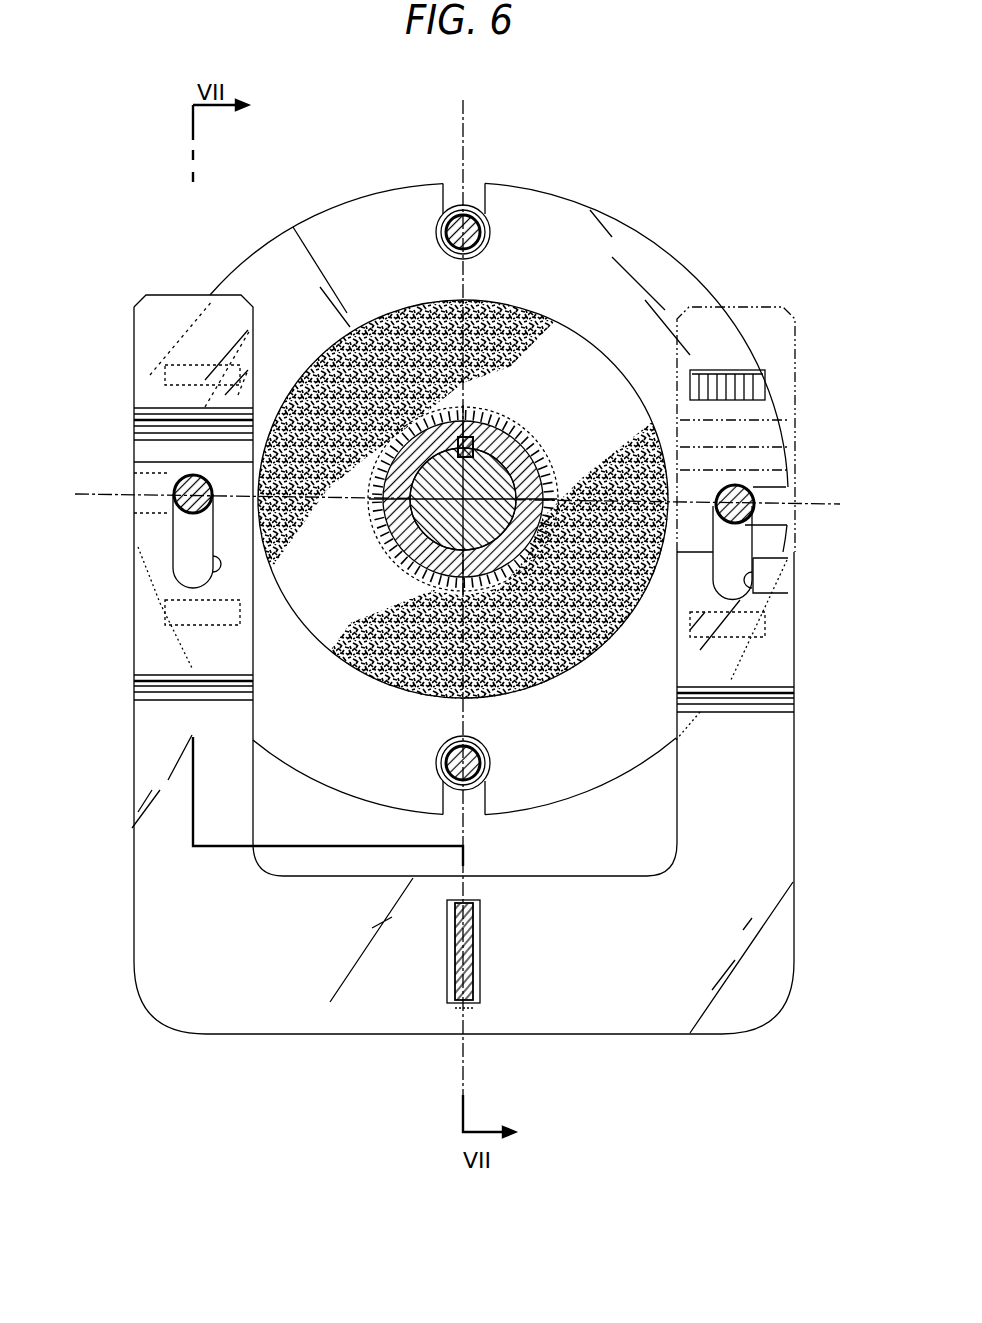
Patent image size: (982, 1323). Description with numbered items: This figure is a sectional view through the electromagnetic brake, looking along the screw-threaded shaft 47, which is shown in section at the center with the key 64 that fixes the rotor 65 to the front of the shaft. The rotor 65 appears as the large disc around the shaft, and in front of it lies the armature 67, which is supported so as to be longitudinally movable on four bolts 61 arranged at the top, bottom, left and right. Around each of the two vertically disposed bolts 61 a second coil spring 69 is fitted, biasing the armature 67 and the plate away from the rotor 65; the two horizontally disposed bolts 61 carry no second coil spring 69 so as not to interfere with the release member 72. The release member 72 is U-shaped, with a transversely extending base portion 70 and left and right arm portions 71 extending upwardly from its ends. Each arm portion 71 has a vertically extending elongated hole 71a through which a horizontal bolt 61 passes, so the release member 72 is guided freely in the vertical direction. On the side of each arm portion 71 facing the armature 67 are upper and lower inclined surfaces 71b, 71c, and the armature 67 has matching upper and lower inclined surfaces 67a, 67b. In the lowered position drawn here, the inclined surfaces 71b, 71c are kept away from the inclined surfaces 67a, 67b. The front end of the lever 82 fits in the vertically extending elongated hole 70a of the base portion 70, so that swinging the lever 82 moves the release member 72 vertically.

The screw-threaded shaft 47 is at (510, 480).
The bolt 61 is at (445, 216).
The key 64 is at (485, 422).
The rotor 65 is at (415, 300).
The armature 67 is at (655, 240).
The upper inclined surface 67a is at (155, 375).
The lower inclined surface 67b is at (165, 632).
The second coil spring 69 is at (490, 253).
The base portion 70 is at (368, 1010).
The elongated hole 70a is at (474, 944).
The arm portion 71 is at (150, 772).
The elongated hole 71a is at (213, 565).
The upper inclined surface 71b is at (130, 437).
The lower inclined surface 71c is at (125, 690).
The release member 72 is at (796, 862).
The lever 82 is at (455, 968).